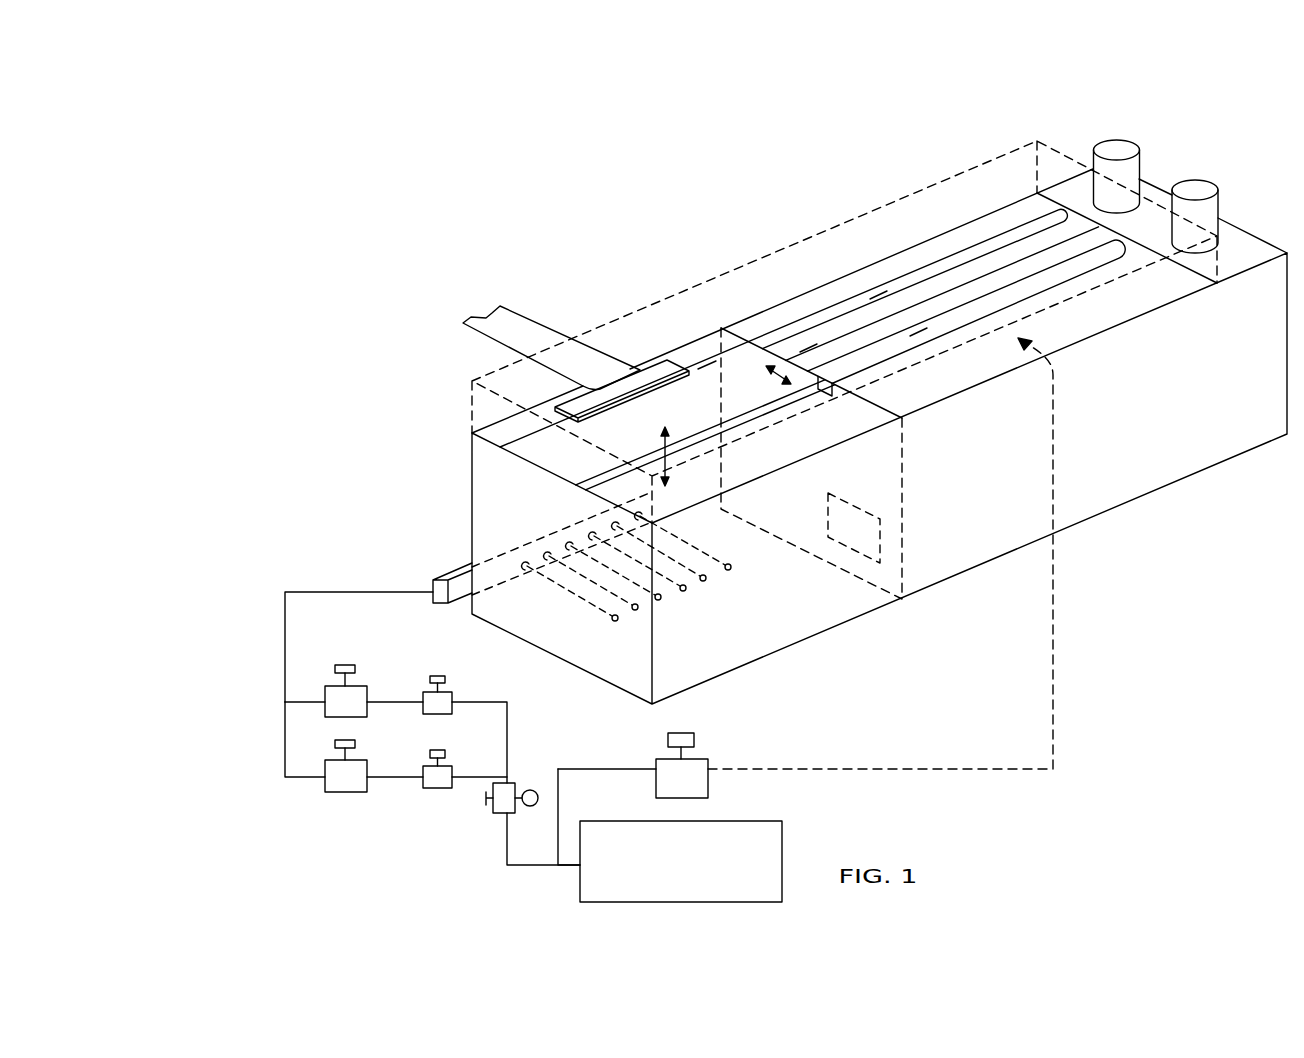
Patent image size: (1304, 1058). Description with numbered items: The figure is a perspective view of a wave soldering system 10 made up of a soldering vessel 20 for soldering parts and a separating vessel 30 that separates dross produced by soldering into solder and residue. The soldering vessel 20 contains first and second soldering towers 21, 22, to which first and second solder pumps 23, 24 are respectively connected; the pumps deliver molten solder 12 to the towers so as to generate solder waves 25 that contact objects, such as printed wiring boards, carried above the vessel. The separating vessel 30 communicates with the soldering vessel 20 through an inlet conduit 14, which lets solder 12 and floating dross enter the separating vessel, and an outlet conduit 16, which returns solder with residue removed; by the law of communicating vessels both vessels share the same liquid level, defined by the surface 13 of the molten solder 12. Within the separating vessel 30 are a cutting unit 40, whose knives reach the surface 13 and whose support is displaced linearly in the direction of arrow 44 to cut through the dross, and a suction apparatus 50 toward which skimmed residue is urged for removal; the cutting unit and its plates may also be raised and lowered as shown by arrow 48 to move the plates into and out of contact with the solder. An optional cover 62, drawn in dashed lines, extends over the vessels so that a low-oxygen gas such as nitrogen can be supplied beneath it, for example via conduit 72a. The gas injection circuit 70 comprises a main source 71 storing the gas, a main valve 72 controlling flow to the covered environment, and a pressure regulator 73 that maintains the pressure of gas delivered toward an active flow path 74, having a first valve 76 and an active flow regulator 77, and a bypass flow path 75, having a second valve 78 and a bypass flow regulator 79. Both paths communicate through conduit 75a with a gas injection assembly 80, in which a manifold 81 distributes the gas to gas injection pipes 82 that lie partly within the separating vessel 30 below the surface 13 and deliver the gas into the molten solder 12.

The wave soldering system 10 is at (668, 65).
The molten solder 12 is at (855, 327).
The surface of the molten solder 13 is at (808, 347).
The inlet conduit 14 is at (832, 397).
The outlet conduit 16 is at (880, 550).
The soldering vessel 20 is at (1136, 516).
The first soldering tower 21 is at (958, 258).
The second soldering tower 22 is at (1003, 293).
The first solder pump 23 is at (1117, 148).
The second solder pump 24 is at (1195, 188).
The solder waves 25 is at (920, 332).
The separating vessel 30 is at (789, 667).
The cutting unit 40 is at (703, 409).
The arrow indicating support movement 44 is at (778, 376).
The arrow indicating vertical movement 48 is at (666, 458).
The suction apparatus 50 is at (641, 374).
The cover 62 is at (805, 240).
The gas injection circuit 70 is at (307, 845).
The main source 71 is at (670, 835).
The main valve 72 is at (690, 770).
The conduit 72a is at (905, 769).
The pressure regulator 73 is at (510, 787).
The active flow path 74 is at (297, 702).
The bypass flow path 75 is at (285, 755).
The conduit 75a is at (285, 644).
The first valve 76 is at (447, 695).
The active flow regulator 77 is at (355, 687).
The second valve 78 is at (435, 778).
The bypass flow regulator 79 is at (337, 783).
The gas injection assembly 80 is at (450, 561).
The manifold 81 is at (438, 597).
The gas injection pipes 82 is at (732, 572).